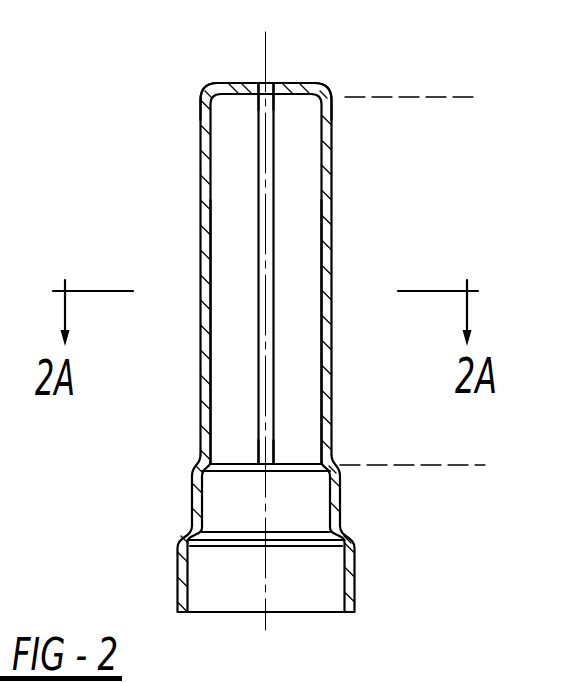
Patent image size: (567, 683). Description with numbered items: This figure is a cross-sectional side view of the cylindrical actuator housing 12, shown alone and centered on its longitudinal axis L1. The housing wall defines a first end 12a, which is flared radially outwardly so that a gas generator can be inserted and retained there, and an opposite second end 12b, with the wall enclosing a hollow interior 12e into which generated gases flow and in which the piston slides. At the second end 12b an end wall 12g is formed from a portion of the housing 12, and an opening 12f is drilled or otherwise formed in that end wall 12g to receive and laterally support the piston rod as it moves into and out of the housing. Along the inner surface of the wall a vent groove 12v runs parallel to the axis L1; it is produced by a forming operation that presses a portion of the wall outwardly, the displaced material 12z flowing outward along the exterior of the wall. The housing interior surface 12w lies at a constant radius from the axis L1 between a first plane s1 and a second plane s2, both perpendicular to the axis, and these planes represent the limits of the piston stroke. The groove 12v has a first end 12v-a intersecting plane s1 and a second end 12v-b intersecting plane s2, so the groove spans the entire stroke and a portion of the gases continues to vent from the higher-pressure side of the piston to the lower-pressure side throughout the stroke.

The housing 12 is at (200, 150).
The first end 12a is at (354, 582).
The second end 12b is at (200, 107).
The hollow interior 12e is at (237, 280).
The opening 12f is at (273, 93).
The end wall 12g is at (312, 83).
The vent groove 12v is at (258, 235).
The first end of vent groove 12v-a is at (258, 464).
The second end of vent groove 12v-b is at (258, 92).
The housing interior surface 12w is at (322, 241).
The displaced housing wall material portion 12z is at (192, 473).
The housing longitudinal axis L1 is at (266, 50).
The first plane s1 is at (430, 465).
The second plane s2 is at (455, 97).